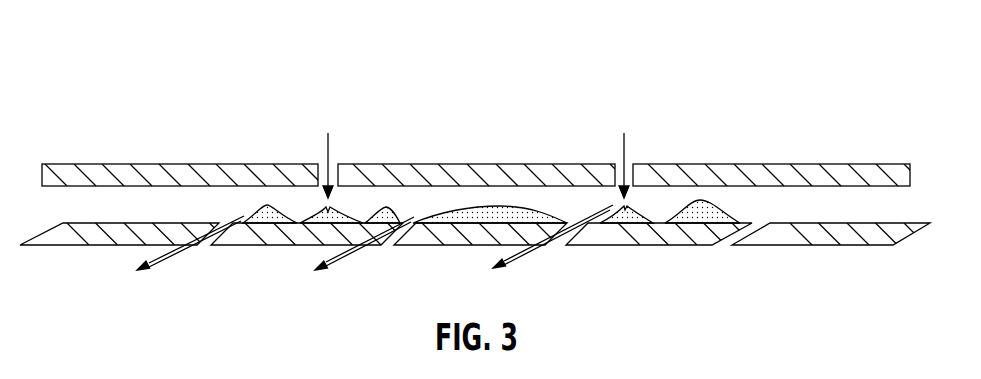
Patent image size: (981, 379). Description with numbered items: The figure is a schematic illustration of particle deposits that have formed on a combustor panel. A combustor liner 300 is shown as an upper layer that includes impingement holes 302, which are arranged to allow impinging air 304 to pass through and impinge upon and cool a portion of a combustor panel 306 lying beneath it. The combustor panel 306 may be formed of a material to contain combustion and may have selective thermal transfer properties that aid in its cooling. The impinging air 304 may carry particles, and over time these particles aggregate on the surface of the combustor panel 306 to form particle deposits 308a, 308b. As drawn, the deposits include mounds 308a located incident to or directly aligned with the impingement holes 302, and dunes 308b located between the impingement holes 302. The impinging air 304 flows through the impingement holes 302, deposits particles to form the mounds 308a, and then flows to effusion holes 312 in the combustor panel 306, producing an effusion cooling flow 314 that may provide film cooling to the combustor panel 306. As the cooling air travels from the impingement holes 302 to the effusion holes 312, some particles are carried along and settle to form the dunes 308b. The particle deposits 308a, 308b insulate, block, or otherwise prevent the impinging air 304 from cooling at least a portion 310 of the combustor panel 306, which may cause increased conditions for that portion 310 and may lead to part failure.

The combustor liner 300 is at (488, 163).
The impingement holes 302 is at (320, 155).
The impinging air 304 is at (615, 150).
The combustor panel 306 is at (842, 230).
The mounds 308a is at (330, 212).
The dunes 308b is at (265, 208).
The portion of the combustor panel 310 is at (457, 233).
The effusion holes 312 is at (196, 256).
The effusion cooling flow 314 is at (517, 262).